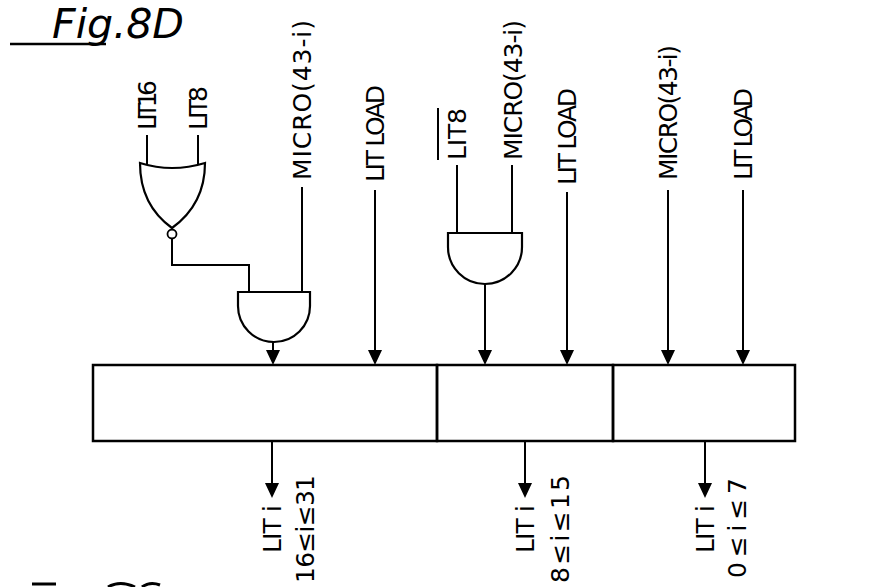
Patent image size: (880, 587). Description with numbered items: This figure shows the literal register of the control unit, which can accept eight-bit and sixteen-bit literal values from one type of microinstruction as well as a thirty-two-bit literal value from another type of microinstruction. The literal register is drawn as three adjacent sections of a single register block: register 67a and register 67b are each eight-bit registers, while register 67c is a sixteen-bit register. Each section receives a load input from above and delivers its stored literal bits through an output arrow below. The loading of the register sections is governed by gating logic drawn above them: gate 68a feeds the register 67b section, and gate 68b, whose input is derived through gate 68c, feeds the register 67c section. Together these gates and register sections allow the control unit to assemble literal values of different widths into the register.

The NOR gate 68c is at (152, 195).
The AND gate 68b is at (240, 305).
The AND gate 68a is at (462, 248).
The register 67c is at (135, 435).
The register 67b is at (470, 437).
The register 67a is at (790, 436).